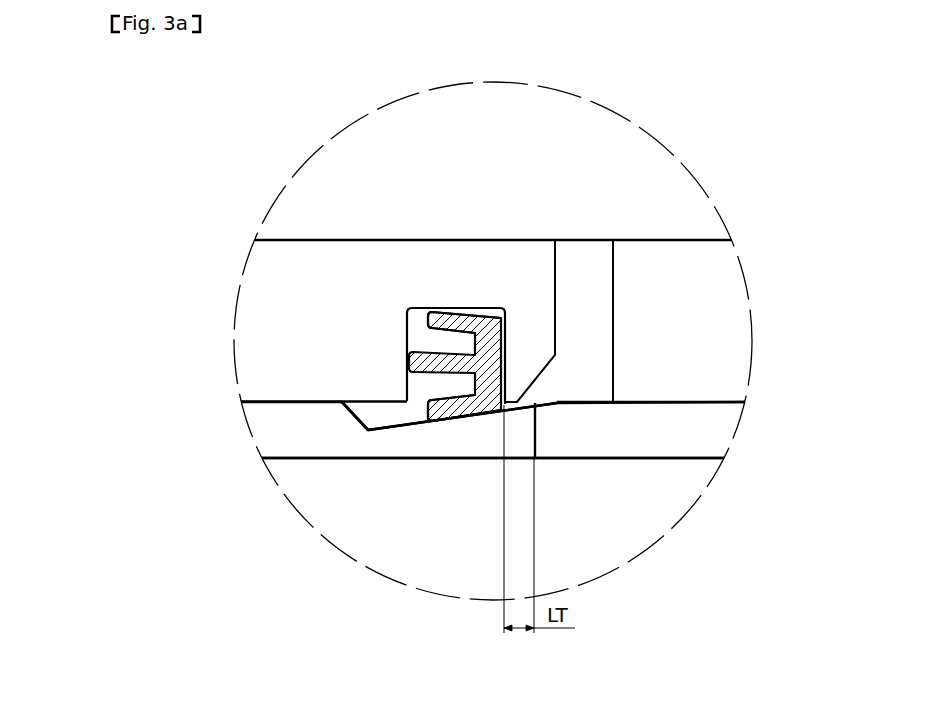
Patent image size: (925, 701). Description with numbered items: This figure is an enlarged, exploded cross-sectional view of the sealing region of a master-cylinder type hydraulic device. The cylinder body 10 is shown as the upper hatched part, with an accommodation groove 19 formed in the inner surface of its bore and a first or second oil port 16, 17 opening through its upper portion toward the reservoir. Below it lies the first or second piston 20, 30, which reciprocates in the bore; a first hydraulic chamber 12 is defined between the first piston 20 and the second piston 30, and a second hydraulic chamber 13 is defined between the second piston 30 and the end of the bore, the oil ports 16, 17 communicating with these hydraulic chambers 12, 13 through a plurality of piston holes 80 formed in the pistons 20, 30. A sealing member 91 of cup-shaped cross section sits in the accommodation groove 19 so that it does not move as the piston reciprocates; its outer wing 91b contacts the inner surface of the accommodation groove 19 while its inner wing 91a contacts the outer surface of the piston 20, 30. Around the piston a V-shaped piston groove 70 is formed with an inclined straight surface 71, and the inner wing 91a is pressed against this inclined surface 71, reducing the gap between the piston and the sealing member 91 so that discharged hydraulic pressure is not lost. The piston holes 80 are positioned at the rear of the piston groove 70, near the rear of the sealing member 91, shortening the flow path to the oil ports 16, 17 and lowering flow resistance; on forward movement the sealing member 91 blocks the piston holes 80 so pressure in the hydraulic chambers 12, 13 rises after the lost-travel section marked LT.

The cylinder body 10 is at (718, 318).
The first hydraulic chamber 12 is at (495, 525).
The second hydraulic chamber 13 is at (641, 492).
The first oil port 16 is at (612, 287).
The second oil port 17 is at (584, 283).
The accommodation groove 19 is at (412, 308).
The first piston 20 is at (547, 430).
The second piston 30 is at (715, 427).
The piston groove 70 is at (367, 409).
The inclined surface 71 is at (405, 423).
The piston hole 80 is at (495, 434).
The sealing member 91 is at (163, 263).
The inner wing 91a is at (433, 404).
The outer wing 91b is at (433, 320).